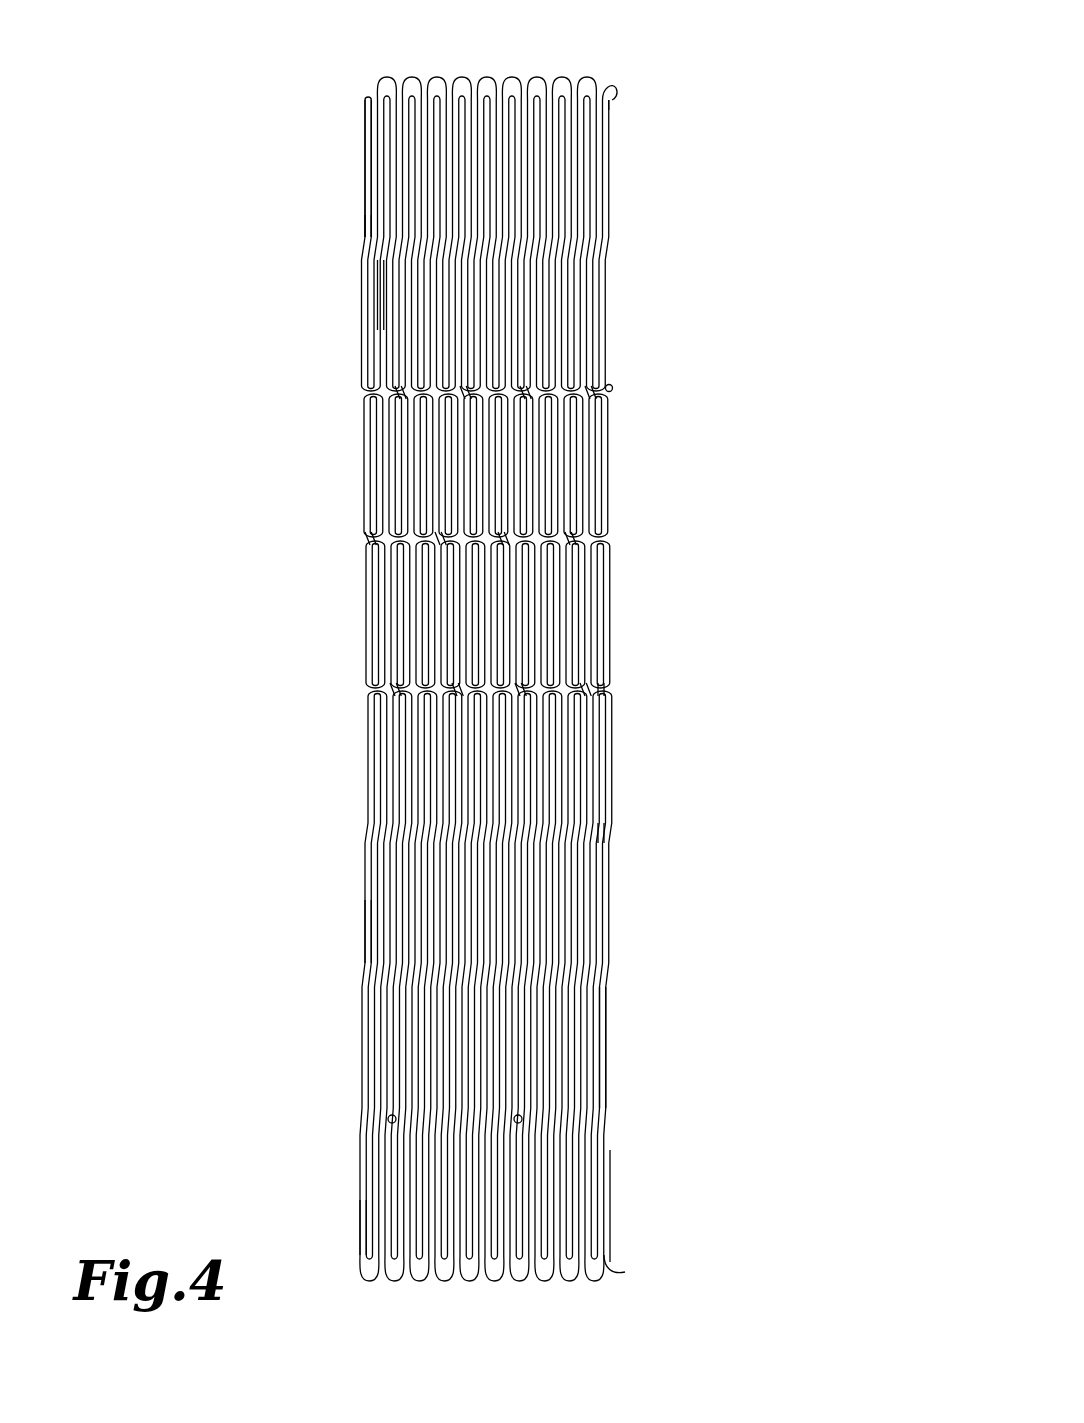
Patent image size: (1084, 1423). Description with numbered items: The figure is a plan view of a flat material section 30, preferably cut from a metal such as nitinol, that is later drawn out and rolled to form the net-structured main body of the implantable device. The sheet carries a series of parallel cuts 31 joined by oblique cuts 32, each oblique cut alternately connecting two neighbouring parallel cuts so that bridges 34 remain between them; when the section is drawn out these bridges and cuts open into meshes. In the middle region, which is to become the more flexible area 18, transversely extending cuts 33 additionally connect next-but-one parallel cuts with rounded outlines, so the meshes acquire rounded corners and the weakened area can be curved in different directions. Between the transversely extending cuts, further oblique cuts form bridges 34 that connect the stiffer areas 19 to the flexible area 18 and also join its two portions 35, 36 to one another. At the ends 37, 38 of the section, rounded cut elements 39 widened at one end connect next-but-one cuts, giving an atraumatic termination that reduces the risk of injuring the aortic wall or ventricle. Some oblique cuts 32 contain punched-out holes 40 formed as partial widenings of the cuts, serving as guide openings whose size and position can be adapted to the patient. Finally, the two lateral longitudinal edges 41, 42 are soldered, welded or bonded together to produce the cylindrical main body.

The material section 30 is at (438, 673).
The flexible area 18 is at (434, 540).
The stiffer areas 19 is at (666, 1279).
The parallel cuts 31 is at (386, 317).
The oblique cuts 32 is at (608, 386).
The transversely extending cuts 33 is at (603, 88).
The bridges 34 is at (600, 834).
The first portion of the flexible area 35 is at (191, 384).
The second portion of the flexible area 36 is at (186, 543).
The first end of the material section 37 is at (357, 97).
The second end of the material section 38 is at (342, 1266).
The rounded cut elements 39 is at (618, 91).
The holes 40 is at (516, 1120).
The first lateral longitudinal edge 41 is at (366, 962).
The second lateral longitudinal edge 42 is at (606, 1030).